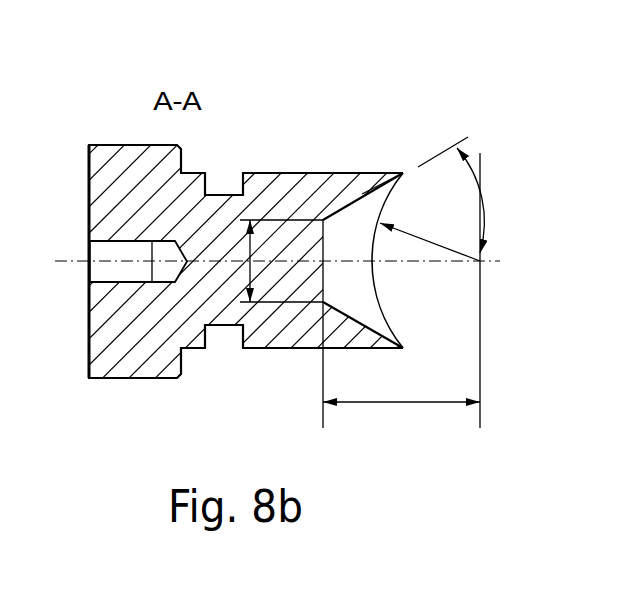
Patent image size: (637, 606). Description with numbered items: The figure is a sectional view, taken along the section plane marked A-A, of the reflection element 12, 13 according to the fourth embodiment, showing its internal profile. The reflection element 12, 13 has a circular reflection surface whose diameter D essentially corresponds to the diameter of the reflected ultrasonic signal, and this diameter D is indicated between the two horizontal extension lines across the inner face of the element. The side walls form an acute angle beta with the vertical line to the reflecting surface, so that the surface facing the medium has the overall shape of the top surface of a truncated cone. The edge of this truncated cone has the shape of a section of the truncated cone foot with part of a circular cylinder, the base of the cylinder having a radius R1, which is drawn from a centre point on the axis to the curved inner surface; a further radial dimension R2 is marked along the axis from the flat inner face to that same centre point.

The reflection element 12 is at (318, 225).
The reflection element 13 is at (100, 143).
The diameter D is at (273, 261).
The radius R1 is at (430, 236).
The cavity depth radius R2 is at (401, 290).